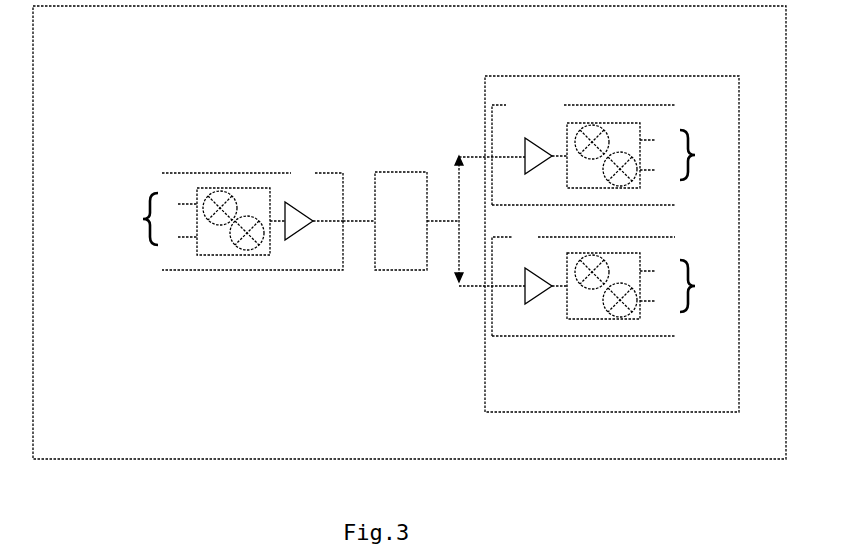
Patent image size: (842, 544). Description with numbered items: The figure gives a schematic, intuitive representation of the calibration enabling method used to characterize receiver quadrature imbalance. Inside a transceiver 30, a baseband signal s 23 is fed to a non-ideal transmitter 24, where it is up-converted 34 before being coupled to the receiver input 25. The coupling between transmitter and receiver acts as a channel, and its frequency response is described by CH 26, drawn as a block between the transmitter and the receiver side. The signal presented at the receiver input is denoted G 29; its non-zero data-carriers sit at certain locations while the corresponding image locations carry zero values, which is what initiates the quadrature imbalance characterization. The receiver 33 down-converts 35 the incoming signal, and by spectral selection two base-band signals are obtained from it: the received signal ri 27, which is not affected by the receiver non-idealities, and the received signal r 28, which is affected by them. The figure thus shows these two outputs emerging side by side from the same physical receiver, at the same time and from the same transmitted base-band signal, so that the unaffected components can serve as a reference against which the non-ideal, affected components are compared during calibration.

The baseband signal 23 is at (157, 219).
The non-ideal transmitter 24 is at (252, 217).
The receiver input 25 is at (434, 219).
The channel frequency response CH 26 is at (401, 221).
The received signal ri 27 is at (679, 155).
The received signal r 28 is at (680, 286).
The signal G 29 is at (491, 297).
The transceiver 30 is at (409, 232).
The receiver 33 is at (612, 244).
The up-conversion 34 is at (233, 221).
The down-conversion 35 is at (603, 221).